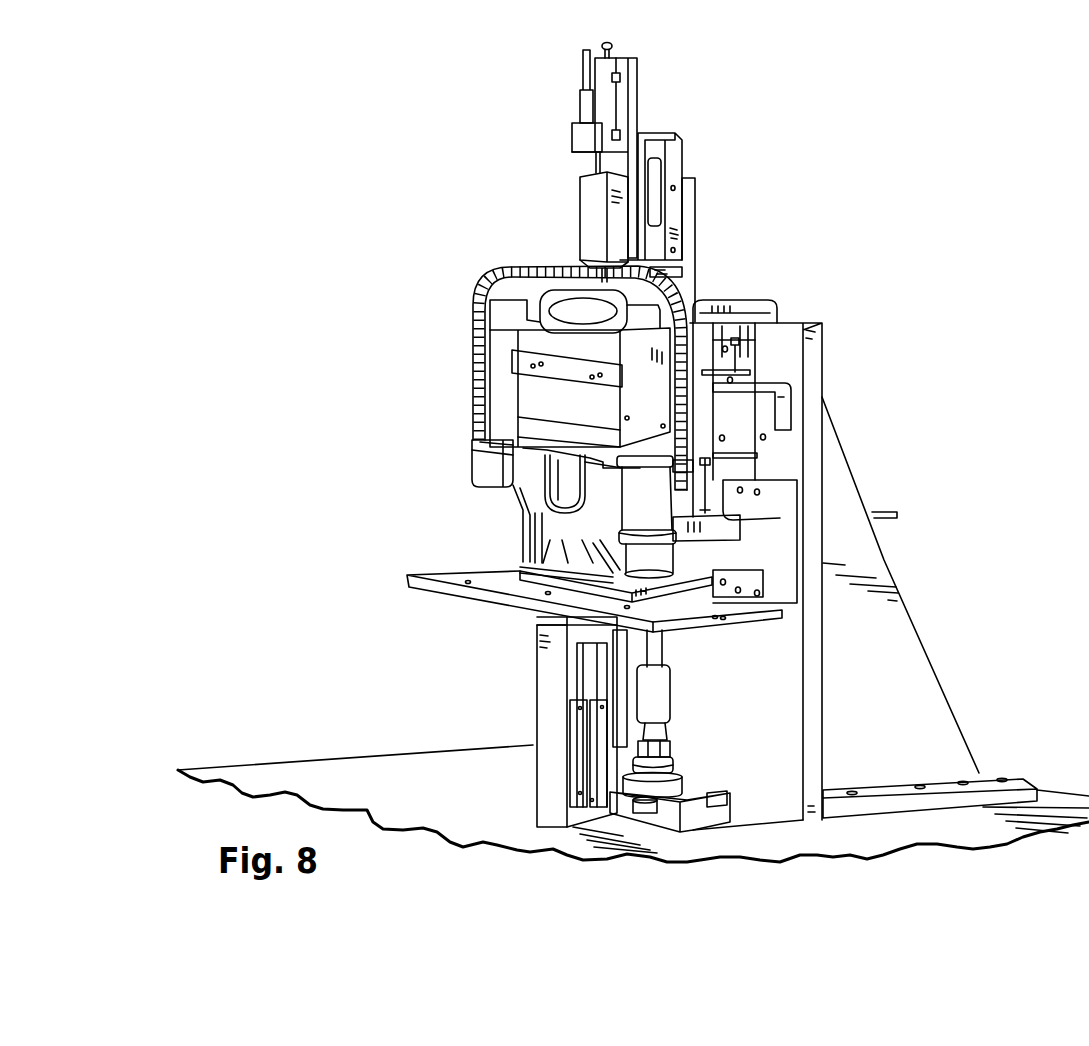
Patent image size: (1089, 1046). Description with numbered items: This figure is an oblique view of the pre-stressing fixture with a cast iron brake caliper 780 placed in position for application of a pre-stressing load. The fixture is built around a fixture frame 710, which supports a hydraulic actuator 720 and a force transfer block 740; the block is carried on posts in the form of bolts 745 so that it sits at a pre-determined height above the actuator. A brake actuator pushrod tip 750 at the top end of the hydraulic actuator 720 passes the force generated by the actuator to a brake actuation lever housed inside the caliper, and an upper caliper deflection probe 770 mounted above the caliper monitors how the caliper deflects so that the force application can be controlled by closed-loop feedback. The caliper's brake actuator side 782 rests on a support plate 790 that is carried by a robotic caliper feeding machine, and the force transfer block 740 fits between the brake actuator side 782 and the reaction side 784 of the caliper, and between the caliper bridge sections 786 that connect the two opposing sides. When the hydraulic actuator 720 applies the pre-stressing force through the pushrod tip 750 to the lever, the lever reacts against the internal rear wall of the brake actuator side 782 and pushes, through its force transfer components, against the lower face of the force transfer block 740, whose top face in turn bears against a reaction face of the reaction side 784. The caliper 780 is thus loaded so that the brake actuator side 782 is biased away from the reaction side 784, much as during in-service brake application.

The fixture frame 710 is at (820, 362).
The hydraulic actuator 720 is at (697, 810).
The force transfer block 740 is at (497, 393).
The bolts 745 is at (747, 477).
The brake actuator pushrod tip 750 is at (667, 666).
The upper caliper deflection probe 770 is at (585, 258).
The cast iron brake caliper 780 is at (470, 455).
The brake actuator side 782 is at (518, 551).
The reaction side 784 is at (490, 277).
The caliper bridge sections 786 is at (473, 337).
The support plate 790 is at (462, 598).